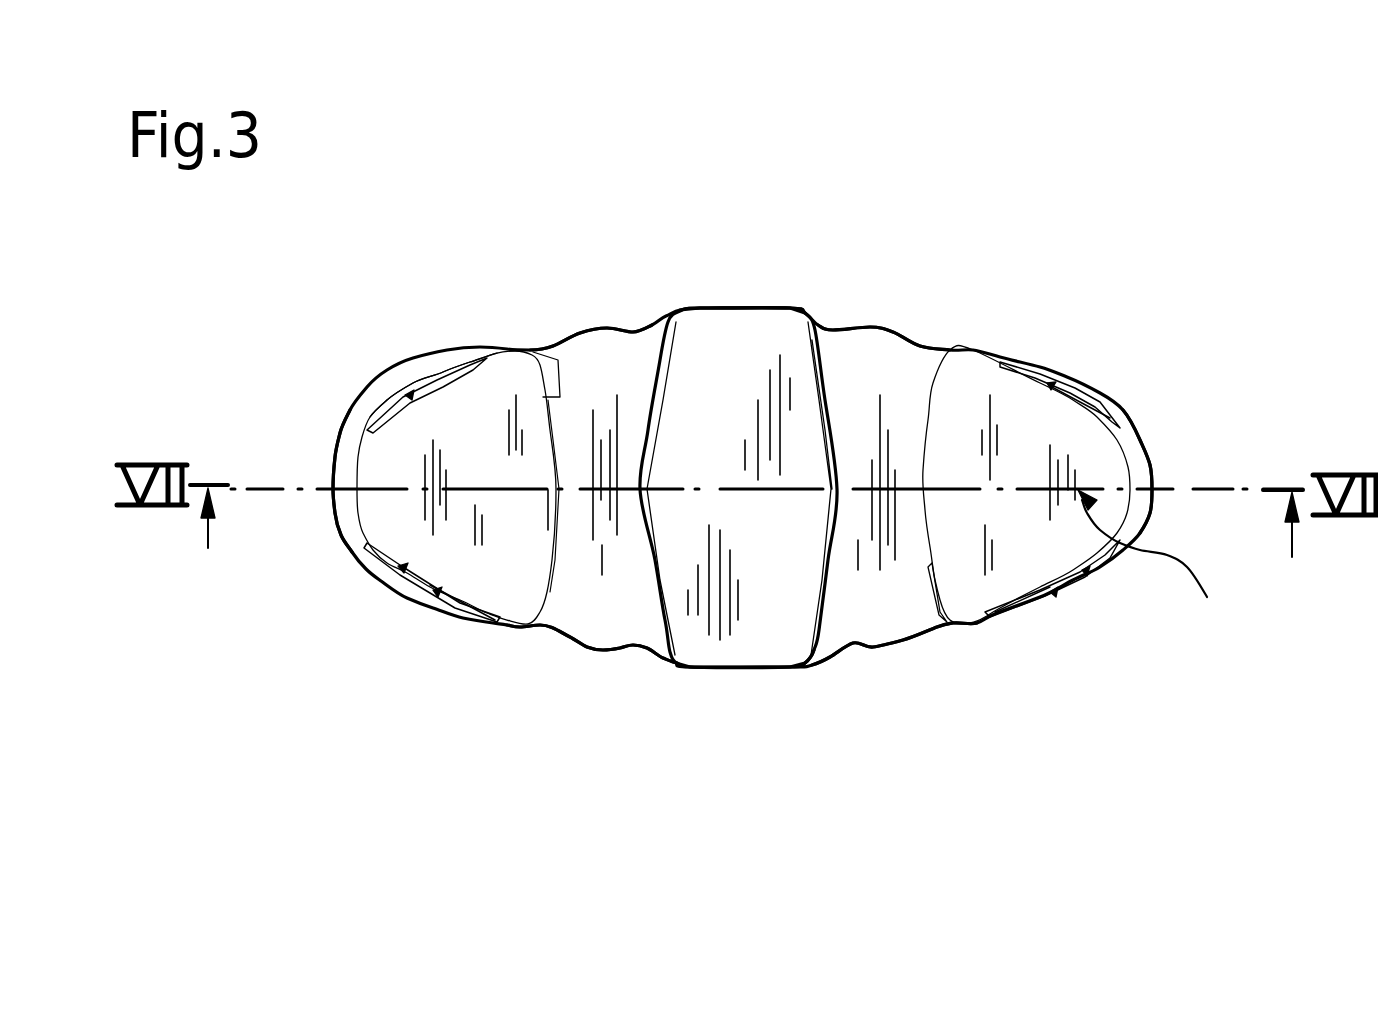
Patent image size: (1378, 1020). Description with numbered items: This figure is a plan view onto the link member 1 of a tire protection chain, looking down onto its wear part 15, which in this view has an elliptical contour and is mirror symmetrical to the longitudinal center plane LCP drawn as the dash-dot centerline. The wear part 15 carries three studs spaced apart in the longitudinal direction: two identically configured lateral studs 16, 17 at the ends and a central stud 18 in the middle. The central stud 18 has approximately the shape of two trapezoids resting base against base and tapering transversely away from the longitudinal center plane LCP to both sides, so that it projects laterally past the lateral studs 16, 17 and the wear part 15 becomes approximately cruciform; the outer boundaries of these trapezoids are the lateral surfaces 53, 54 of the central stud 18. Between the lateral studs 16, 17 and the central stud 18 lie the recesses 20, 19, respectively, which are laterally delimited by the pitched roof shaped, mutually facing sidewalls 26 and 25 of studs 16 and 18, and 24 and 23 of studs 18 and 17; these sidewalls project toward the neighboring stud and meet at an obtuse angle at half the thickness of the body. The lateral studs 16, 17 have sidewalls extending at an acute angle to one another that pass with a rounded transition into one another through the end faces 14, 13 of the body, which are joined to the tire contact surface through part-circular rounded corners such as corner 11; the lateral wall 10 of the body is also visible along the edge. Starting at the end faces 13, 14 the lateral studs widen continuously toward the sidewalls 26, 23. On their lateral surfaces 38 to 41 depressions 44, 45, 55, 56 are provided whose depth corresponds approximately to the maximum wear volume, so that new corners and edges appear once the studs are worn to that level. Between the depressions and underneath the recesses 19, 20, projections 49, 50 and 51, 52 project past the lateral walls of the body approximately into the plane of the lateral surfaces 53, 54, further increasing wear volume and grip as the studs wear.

The link member 1 is at (1026, 318).
The lateral wall 10 is at (677, 670).
The part-circular rounded corner 11 is at (485, 353).
The end face 13 is at (1140, 483).
The end face 14 is at (350, 487).
The wear part 15 is at (803, 685).
The lateral stud 16 is at (393, 517).
The lateral stud 17 is at (1020, 403).
The central stud 18 is at (773, 360).
The recess 19 is at (900, 387).
The recess 20 is at (580, 587).
The sidewall 23 is at (932, 567).
The sidewall 24 is at (830, 593).
The sidewall 25 is at (653, 372).
The sidewall 26 is at (555, 368).
The lateral surface 38 is at (1050, 593).
The lateral surface 39 is at (403, 590).
The lateral surface 40 is at (1080, 393).
The lateral surface 41 is at (447, 377).
The depression 44 is at (1083, 580).
The depression 45 is at (433, 597).
The projection 49 is at (590, 648).
The projection 50 is at (897, 650).
The projection 51 is at (588, 330).
The projection 52 is at (887, 327).
The lateral surface of the central stud 53 is at (735, 670).
The lateral surface of the central stud 54 is at (735, 308).
The depression 55 is at (1100, 407).
The depression 56 is at (405, 397).
The longitudinal center plane LCP is at (1184, 576).